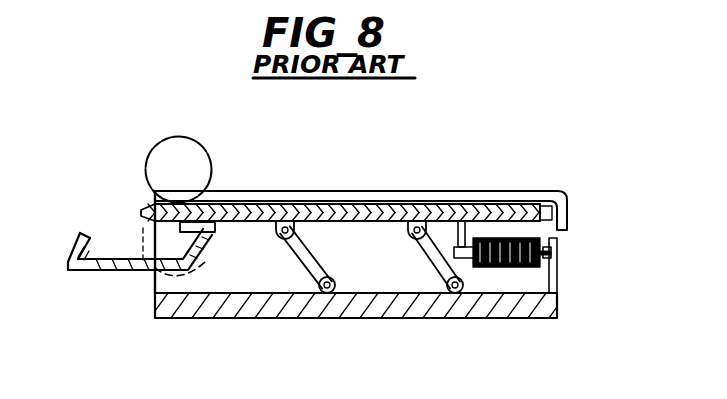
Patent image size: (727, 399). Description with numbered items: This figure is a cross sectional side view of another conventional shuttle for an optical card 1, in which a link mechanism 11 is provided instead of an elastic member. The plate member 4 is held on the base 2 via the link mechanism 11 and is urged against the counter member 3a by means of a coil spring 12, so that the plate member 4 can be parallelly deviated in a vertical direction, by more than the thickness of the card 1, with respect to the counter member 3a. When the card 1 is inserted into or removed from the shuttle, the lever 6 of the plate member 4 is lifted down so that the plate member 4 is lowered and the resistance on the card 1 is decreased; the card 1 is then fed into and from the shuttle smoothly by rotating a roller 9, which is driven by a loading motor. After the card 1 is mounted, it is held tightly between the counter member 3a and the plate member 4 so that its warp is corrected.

The optical card 1 is at (425, 204).
The base 2 is at (522, 307).
The counter member 3a is at (352, 190).
The plate member 4 is at (270, 204).
The lever 6 is at (97, 273).
The roller 9 is at (200, 143).
The link mechanism 11 is at (305, 266).
The coil spring 12 is at (545, 266).